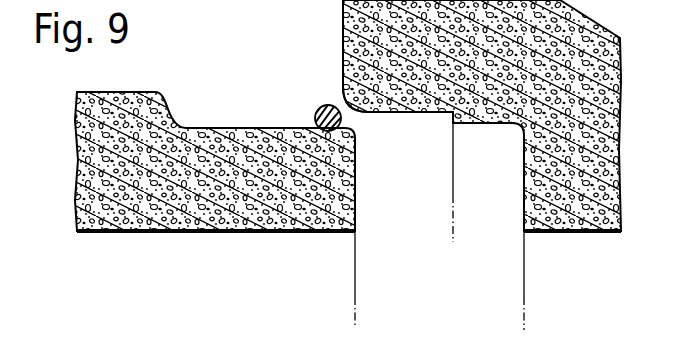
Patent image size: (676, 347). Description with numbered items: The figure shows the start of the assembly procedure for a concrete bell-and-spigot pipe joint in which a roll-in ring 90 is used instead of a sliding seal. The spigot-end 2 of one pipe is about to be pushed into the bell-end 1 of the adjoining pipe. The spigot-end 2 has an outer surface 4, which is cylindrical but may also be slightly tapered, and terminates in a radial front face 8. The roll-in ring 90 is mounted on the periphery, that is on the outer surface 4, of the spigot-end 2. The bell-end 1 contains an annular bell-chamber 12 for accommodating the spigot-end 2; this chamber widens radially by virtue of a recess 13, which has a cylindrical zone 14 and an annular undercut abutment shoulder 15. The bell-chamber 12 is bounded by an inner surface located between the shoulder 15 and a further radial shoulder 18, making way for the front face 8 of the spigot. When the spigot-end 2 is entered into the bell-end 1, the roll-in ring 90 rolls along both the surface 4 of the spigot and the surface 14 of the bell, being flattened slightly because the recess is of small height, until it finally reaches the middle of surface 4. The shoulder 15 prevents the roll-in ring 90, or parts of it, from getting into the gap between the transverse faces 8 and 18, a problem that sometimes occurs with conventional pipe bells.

The bell-end 1 is at (356, 29).
The spigot-end 2 is at (259, 233).
The outer surface 4 is at (225, 128).
The radial front face 8 is at (356, 215).
The bell-chamber 12 is at (422, 215).
The recess 13 is at (414, 112).
The cylindrical zone 14 is at (392, 113).
The annular undercut abutment shoulder 15 is at (452, 117).
The radial shoulder 18 is at (524, 213).
The roll-in ring 90 is at (318, 108).